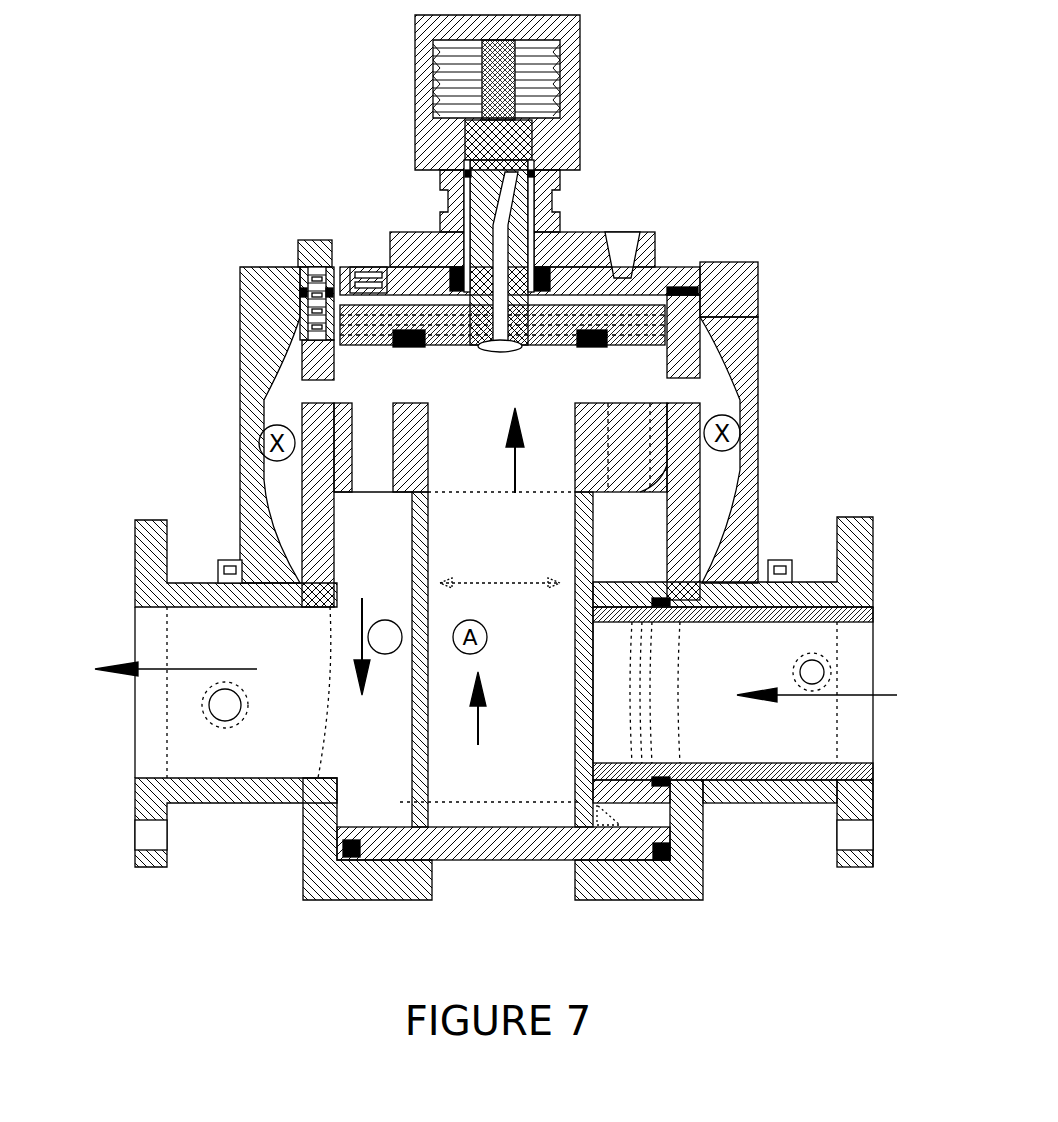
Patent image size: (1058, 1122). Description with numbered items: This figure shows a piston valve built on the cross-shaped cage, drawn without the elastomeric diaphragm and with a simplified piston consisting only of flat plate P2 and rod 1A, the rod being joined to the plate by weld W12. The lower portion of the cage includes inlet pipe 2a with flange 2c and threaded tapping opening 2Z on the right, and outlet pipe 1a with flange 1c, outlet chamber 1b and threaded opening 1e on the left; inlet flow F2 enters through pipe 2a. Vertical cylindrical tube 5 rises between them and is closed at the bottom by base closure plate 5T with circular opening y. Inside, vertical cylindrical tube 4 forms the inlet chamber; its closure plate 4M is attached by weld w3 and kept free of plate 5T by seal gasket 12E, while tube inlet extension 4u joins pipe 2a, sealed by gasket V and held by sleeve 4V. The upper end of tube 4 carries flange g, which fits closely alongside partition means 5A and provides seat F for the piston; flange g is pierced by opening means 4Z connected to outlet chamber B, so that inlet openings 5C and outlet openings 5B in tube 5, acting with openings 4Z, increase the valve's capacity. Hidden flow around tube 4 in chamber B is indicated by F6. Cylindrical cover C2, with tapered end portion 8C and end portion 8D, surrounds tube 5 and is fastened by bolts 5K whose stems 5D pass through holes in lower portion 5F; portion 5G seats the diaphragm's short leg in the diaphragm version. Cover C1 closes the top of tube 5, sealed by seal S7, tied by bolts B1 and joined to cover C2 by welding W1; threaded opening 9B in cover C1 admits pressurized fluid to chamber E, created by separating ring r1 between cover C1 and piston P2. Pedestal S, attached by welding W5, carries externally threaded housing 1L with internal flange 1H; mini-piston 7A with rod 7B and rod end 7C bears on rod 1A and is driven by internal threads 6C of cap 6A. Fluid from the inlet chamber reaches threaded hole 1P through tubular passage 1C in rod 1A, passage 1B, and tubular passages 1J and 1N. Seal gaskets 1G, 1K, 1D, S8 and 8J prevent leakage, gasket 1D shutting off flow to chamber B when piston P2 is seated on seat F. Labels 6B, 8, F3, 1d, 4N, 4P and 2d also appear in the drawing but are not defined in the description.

The cap 6A is at (447, 55).
The internal threads 6C is at (470, 70).
The thread 6B is at (448, 98).
The internal flange 1H is at (428, 108).
The threaded opening 9B is at (355, 263).
The cover C1 is at (322, 238).
The bolts B1 is at (318, 240).
The welding W1 is at (302, 267).
The tapered end portion 8C is at (267, 273).
The tube portion 5G is at (290, 350).
The partition means 5A is at (285, 410).
The diaphragm 8 is at (240, 428).
The lower portion 5F is at (275, 490).
The cylindrical cover C2 is at (250, 517).
The flange 1c is at (133, 558).
The end portion 8D is at (258, 543).
The outlet pipe 1a is at (188, 607).
The flow direction F3 is at (153, 673).
The outlet chamber 1b is at (183, 688).
The groove 1d is at (145, 835).
The threaded opening 1e is at (226, 706).
The bolts 5K is at (225, 580).
The seal gasket 8J is at (292, 560).
The bolt stems 5D is at (263, 605).
The outlet openings 5B is at (374, 627).
The annular chamber 4N is at (390, 715).
The vertical cylindrical tube 4 is at (430, 722).
The piston flange 4P is at (577, 802).
The closure plate 4M is at (455, 826).
The weld w3 is at (393, 826).
The vertical cylindrical tube 5 is at (307, 827).
The base closure plate 5T is at (422, 897).
The circular opening y is at (540, 896).
The seal gasket 12E is at (730, 873).
The flange 2c is at (870, 868).
The groove 2d is at (857, 843).
The inlet pipe 2a is at (778, 803).
The inlet flow F2 is at (839, 693).
The sleeve 4V is at (820, 624).
The threaded tapping opening 2Z is at (870, 612).
The tube inlet extension 4u is at (630, 770).
The seal gasket V is at (615, 610).
The inlet openings 5C is at (687, 392).
The seal S7 is at (703, 312).
The chamber E is at (688, 262).
The welding W5 is at (680, 262).
The outlet chamber B is at (653, 247).
The threaded hole 1P is at (625, 250).
The tubular passage 1N is at (572, 225).
The tubular passage 1J is at (548, 212).
The passage 1B is at (562, 160).
The piston rod 1A is at (556, 124).
The mini-piston 7A is at (560, 88).
The rod 7B is at (530, 60).
The rod end 7C is at (580, 15).
The housing 1L is at (385, 225).
The seal gasket 1G is at (445, 205).
The seal gasket 1K is at (395, 262).
The pedestal S is at (450, 275).
The separating ring r1 is at (365, 295).
The flat plate piston P2 is at (372, 344).
The opening means 4Z is at (362, 437).
The seal gasket 1D is at (423, 347).
The weld W12 is at (520, 348).
The tubular fluid passage 1C is at (520, 352).
The seal gasket S8 is at (645, 340).
The seat F is at (447, 405).
The flange partition means g is at (432, 452).
The hidden flow F6 is at (500, 551).